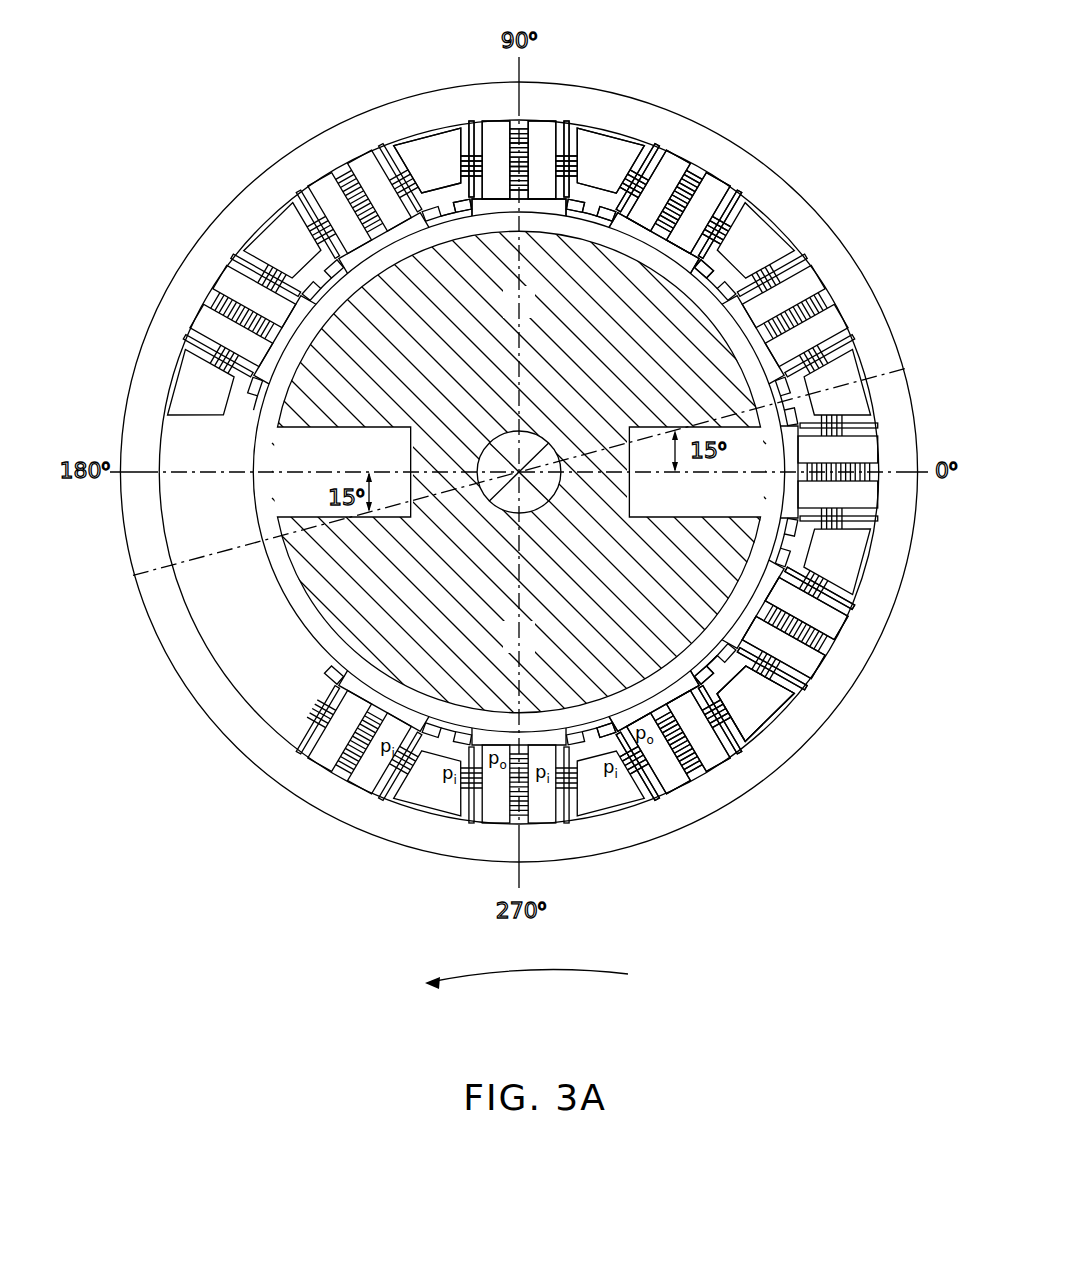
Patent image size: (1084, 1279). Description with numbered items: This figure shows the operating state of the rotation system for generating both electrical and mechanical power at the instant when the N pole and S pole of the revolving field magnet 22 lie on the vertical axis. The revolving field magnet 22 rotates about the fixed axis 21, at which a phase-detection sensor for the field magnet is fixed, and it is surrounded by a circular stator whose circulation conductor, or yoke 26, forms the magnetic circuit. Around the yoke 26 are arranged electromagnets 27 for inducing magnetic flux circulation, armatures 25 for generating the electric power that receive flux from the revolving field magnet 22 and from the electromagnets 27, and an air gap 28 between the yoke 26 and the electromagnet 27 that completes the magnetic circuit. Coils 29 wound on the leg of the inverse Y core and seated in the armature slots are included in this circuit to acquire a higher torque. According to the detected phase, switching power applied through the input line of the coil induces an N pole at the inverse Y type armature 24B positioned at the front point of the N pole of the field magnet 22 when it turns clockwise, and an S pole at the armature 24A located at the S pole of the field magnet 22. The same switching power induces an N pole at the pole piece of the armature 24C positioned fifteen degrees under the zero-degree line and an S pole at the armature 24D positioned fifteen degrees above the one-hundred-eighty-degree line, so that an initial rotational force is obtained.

The fixed axis 21 is at (527, 443).
The revolving field magnet 22 is at (697, 358).
The inverse Y type armature for generating the mechanical power 24A is at (603, 240).
The inverse Y type armature for generating the mechanical power 24B is at (443, 718).
The inverse Y type armature for generating the mechanical power 24C is at (700, 668).
The inverse Y type armature for generating the mechanical power 24D is at (437, 204).
The armature for generating the electric power 25 is at (827, 649).
The circulation conductor (yoke) 26 is at (887, 553).
The electromagnet for inducing magnetic flux circulation 27 is at (853, 604).
The air gap 28 is at (825, 660).
The coils 29 is at (758, 677).